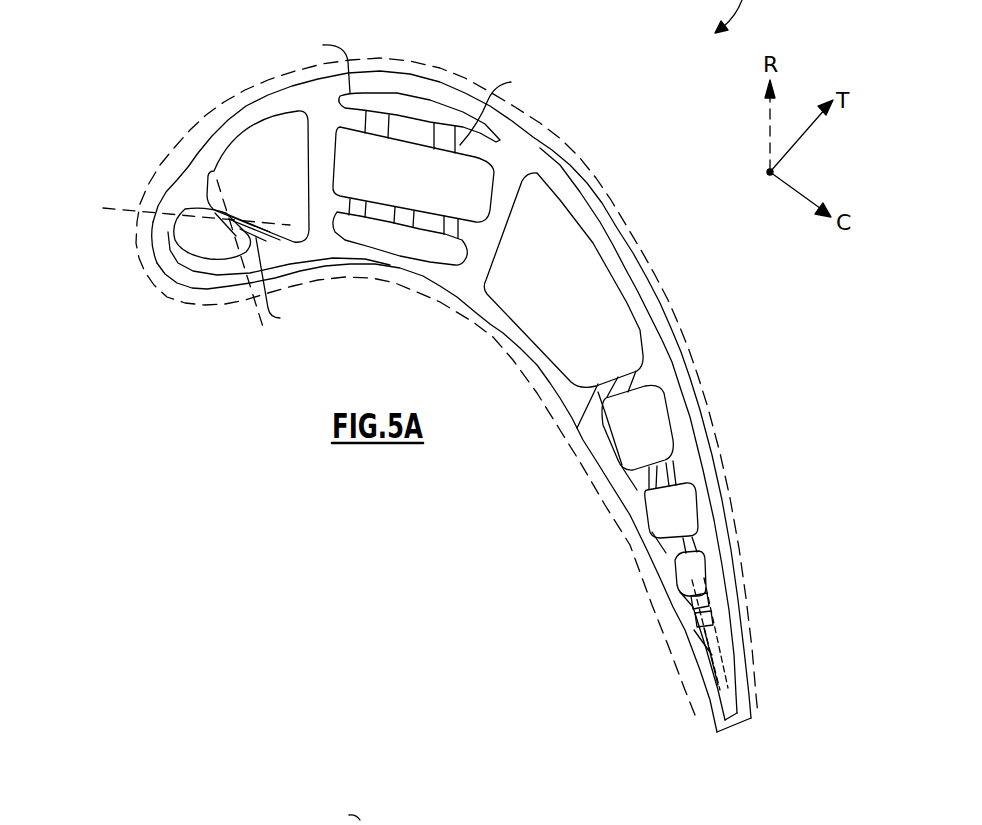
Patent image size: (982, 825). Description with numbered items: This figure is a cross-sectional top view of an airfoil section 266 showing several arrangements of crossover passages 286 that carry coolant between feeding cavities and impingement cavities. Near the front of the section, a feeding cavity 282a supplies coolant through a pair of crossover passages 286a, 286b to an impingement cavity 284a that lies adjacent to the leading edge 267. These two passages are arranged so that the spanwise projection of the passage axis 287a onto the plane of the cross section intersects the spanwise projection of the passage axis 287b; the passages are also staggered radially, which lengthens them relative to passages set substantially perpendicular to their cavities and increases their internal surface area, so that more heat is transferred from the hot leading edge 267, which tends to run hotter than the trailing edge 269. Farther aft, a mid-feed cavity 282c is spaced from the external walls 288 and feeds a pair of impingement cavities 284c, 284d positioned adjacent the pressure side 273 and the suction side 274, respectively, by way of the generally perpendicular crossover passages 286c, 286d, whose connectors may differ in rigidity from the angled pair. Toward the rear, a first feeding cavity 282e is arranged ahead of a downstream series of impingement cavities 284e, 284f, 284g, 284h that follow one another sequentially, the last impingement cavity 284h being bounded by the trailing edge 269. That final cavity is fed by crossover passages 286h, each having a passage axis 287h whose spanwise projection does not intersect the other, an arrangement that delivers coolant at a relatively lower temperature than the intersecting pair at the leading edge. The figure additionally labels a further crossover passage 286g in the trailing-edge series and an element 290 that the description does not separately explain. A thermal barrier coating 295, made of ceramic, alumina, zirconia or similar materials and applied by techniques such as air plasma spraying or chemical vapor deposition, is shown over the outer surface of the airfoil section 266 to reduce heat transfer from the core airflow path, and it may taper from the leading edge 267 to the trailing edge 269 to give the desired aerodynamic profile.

The airfoil section 266 is at (661, 193).
The leading edge 267 is at (156, 264).
The trailing edge 269 is at (727, 733).
The pressure side 273 is at (512, 345).
The suction side 274 is at (622, 260).
The thermal barrier coating 295 is at (166, 292).
The feeding cavity 282a is at (253, 126).
The mid-feed cavity 282c is at (530, 160).
The first feeding cavity 282e is at (646, 318).
The impingement cavity 284a is at (182, 209).
The impingement cavity 284c is at (393, 265).
The impingement cavity 284d is at (391, 94).
The impingement cavity 284e is at (668, 417).
The impingement cavity 284f is at (696, 507).
The impingement cavity 284g is at (708, 560).
The impingement cavity 284h is at (721, 636).
The crossover passages 286 is at (670, 368).
The crossover passage 286a is at (207, 208).
The crossover passage 286b is at (293, 285).
The crossover passage 286c is at (309, 61).
The crossover passage 286d is at (511, 107).
The cooling hole 286g is at (380, 815).
The crossover passages 286h is at (708, 603).
The passage axis 287a is at (104, 210).
The passage axis 287b is at (253, 297).
The passage axis 287h is at (700, 624).
The external walls 288 is at (457, 108).
The rib 290 is at (380, 213).